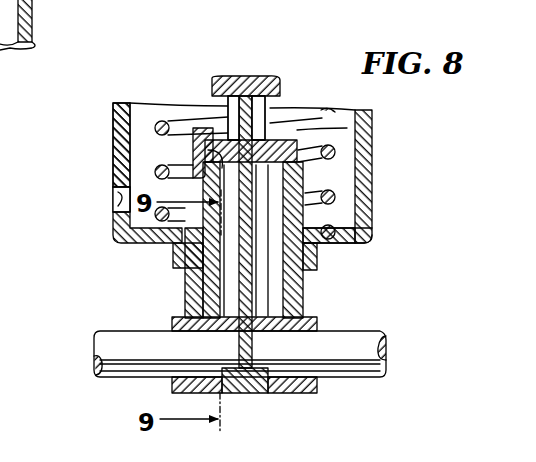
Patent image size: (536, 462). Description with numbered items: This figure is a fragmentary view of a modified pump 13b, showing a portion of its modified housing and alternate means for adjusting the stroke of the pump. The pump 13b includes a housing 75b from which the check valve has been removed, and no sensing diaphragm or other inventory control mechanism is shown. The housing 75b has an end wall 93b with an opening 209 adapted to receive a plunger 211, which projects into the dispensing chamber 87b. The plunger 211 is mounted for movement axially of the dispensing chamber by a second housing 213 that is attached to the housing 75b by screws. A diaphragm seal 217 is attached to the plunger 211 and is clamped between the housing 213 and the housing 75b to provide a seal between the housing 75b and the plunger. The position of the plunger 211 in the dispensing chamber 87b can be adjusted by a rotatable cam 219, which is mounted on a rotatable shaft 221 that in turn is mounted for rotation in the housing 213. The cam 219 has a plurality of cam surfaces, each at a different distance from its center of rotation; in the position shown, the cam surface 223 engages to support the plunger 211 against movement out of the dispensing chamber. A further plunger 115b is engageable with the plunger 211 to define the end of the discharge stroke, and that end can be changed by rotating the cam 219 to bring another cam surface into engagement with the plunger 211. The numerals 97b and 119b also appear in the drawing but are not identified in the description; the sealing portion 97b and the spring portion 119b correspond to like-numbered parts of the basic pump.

The pump 13b is at (108, 127).
The housing 75b is at (110, 147).
The seal ring 97b is at (118, 183).
The dispensing chamber 87b is at (345, 128).
The end wall 93b is at (355, 245).
The left coil spring 119b is at (162, 122).
The diaphragm seal 217 is at (300, 168).
The plunger 115b is at (218, 78).
The plunger 211 is at (257, 78).
The opening 209 is at (270, 108).
The rotatable cam 219 is at (250, 293).
The housing 213 is at (188, 285).
The cam surface 223 is at (225, 225).
The rotatable shaft 221 is at (336, 365).